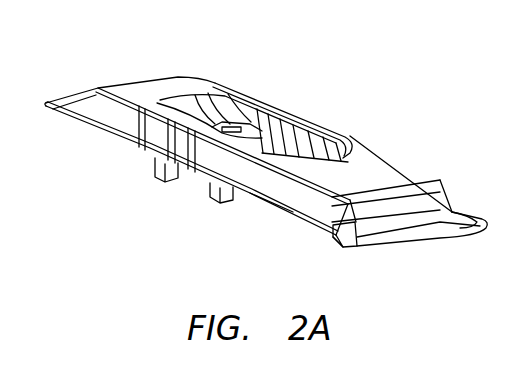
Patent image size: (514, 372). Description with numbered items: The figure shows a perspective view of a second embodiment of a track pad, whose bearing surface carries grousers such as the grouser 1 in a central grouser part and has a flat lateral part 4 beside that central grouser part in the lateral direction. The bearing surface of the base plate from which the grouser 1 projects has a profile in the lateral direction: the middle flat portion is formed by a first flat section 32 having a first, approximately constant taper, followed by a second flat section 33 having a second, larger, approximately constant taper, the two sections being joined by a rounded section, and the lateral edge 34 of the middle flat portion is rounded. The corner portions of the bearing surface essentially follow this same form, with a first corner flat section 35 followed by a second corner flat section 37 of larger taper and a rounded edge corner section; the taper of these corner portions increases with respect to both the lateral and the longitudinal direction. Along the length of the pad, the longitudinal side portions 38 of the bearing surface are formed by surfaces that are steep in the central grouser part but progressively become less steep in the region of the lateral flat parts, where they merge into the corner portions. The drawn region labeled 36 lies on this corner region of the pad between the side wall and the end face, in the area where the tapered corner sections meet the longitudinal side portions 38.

The grouser 1 is at (287, 104).
The flat lateral part 4 is at (152, 88).
The first flat section 32 is at (367, 166).
The second flat section 33 is at (402, 196).
The lateral edge 34 is at (390, 225).
The first corner flat section 35 is at (293, 197).
The corner portion 36 is at (320, 212).
The second corner flat section 37 is at (346, 242).
The longitudinal side portion 38 is at (165, 140).